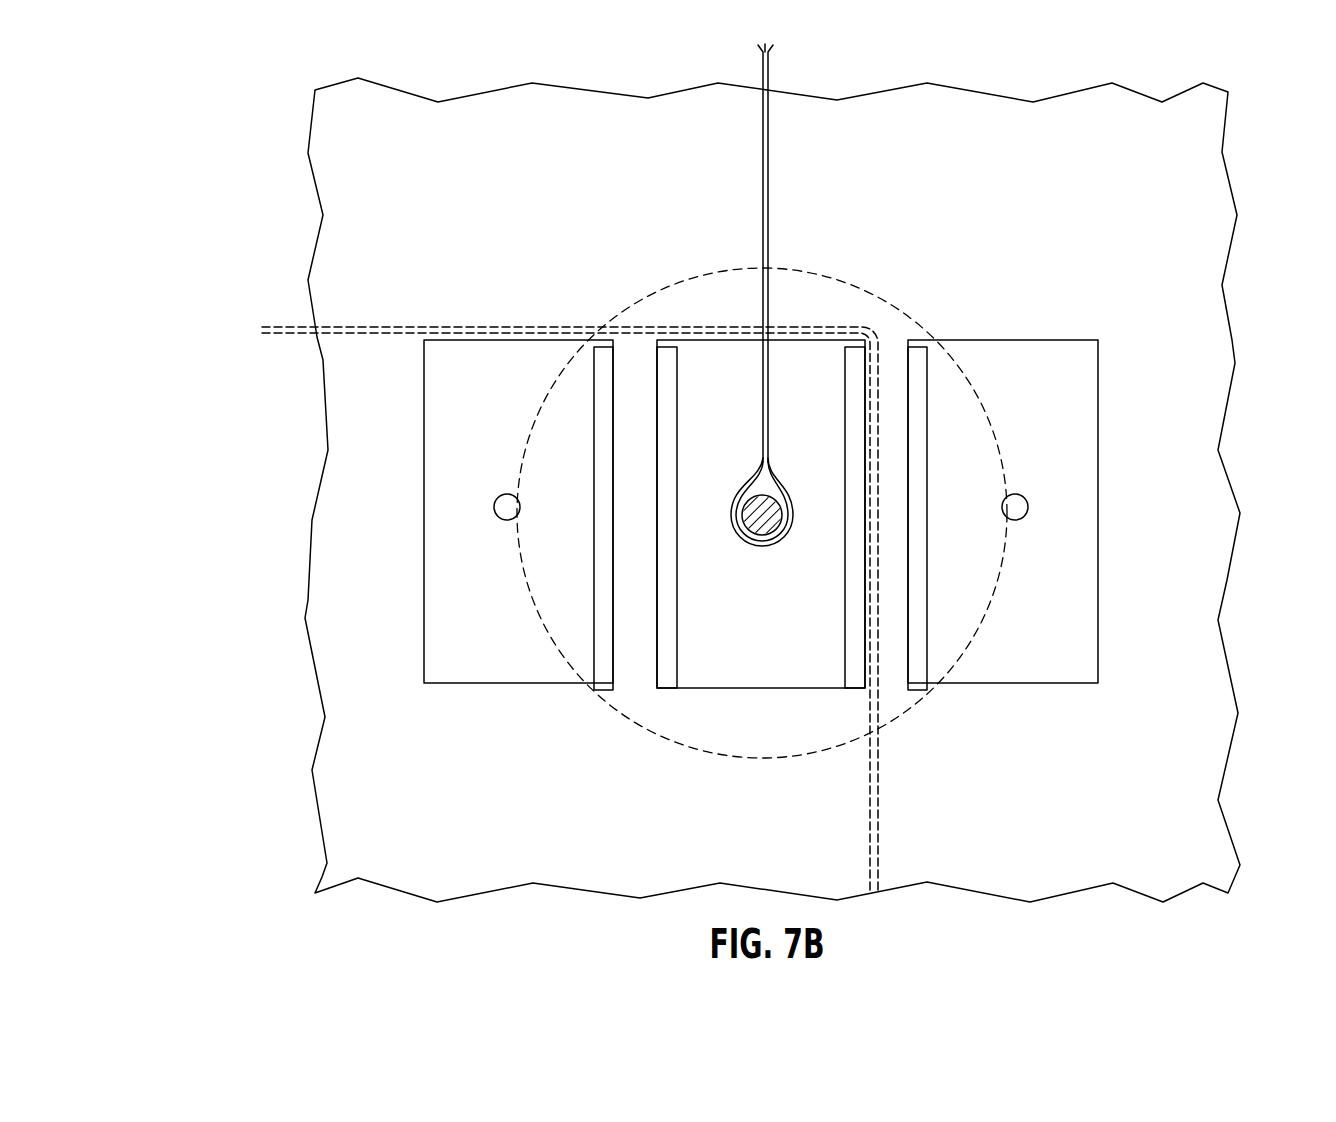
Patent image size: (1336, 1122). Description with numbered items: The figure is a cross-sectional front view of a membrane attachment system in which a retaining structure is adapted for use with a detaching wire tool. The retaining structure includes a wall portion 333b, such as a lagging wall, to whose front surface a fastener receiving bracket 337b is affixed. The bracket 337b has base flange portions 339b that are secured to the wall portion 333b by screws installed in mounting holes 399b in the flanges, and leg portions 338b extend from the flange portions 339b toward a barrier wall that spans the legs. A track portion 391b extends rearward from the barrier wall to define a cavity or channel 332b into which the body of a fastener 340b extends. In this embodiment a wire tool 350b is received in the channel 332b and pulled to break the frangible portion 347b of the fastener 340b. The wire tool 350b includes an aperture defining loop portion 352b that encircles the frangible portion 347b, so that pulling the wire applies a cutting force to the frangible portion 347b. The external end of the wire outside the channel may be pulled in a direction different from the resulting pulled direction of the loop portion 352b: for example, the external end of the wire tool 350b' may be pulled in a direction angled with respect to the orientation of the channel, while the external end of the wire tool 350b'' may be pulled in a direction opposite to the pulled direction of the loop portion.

The wall portion 333b is at (1145, 169).
The base flange portion 339b is at (455, 652).
The leg portion 338b is at (602, 680).
The channel 332b is at (723, 676).
The track portion 391b is at (718, 362).
The fastener receiving bracket 337b is at (905, 713).
The fastener 340b is at (905, 783).
The wire tool 350b is at (807, 251).
The wire tool 350b' is at (546, 364).
The wire tool 350b'' is at (926, 698).
The loop portion 352b is at (758, 485).
The frangible portion 347b is at (782, 507).
The mounting hole 399b is at (501, 518).